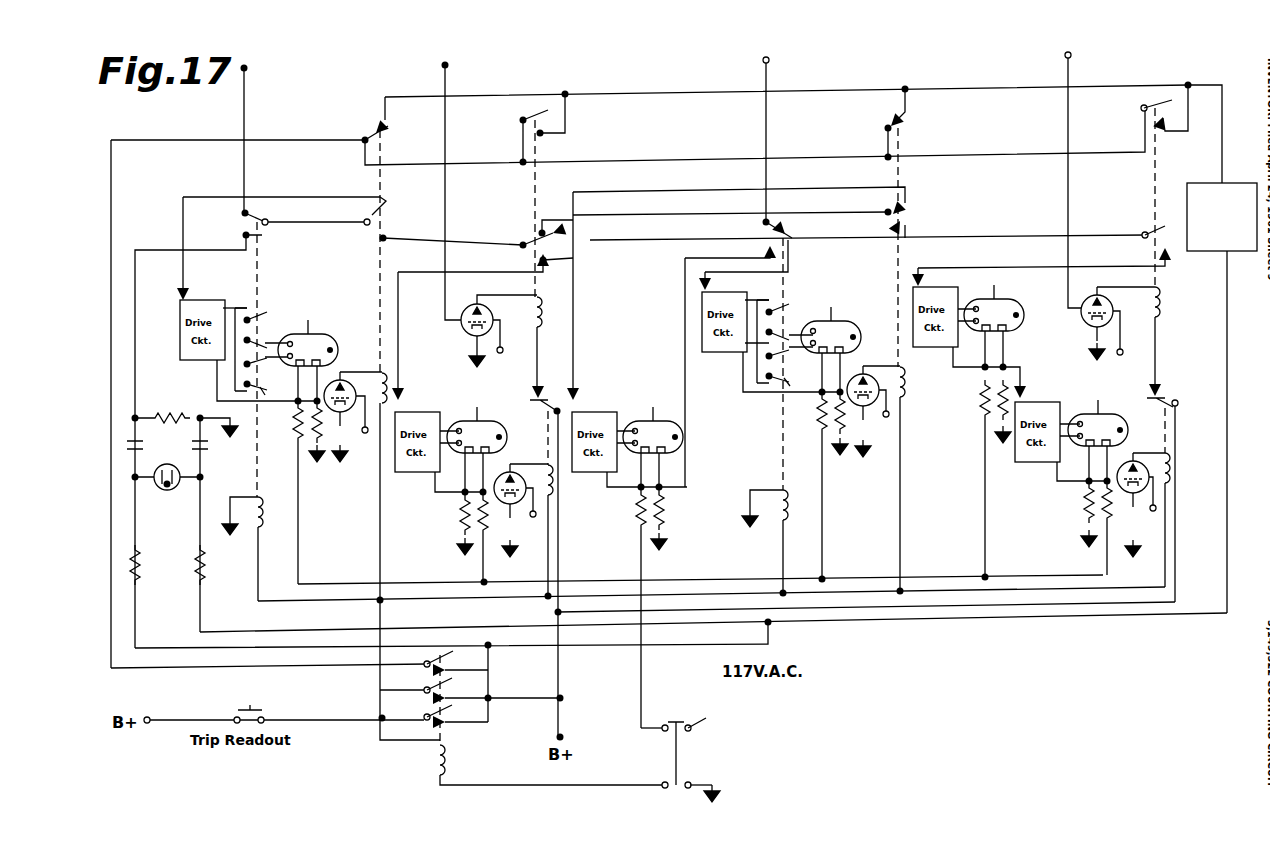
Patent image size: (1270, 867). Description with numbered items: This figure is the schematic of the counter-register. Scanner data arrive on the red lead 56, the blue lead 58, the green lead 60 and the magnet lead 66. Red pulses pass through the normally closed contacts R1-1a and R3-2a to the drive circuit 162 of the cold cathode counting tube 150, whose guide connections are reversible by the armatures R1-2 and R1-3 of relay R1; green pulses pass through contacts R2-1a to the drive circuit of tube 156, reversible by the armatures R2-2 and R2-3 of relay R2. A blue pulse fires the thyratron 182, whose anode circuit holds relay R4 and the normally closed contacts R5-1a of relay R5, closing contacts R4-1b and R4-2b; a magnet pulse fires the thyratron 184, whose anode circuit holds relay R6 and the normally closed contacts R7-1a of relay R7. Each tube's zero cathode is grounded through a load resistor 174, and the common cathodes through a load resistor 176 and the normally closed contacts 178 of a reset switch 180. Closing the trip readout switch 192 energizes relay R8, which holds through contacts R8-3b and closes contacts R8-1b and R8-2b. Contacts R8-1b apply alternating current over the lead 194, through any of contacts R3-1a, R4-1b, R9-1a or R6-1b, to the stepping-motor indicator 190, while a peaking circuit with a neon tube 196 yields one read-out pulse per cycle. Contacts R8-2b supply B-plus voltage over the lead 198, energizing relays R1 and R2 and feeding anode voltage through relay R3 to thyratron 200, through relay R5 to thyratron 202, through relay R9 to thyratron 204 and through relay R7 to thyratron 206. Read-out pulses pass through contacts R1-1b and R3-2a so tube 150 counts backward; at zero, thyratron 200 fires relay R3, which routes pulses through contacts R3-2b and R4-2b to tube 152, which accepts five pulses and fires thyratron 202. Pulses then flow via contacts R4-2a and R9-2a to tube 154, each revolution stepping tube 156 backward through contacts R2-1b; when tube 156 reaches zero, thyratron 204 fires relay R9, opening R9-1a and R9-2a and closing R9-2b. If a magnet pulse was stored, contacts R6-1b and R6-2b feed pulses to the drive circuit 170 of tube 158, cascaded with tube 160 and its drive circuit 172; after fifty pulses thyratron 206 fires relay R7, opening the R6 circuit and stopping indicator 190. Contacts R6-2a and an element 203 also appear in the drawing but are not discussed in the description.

The red lead 56 is at (244, 95).
The blue lead 58 is at (445, 77).
The green lead 60 is at (766, 70).
The magnet lead 66 is at (1068, 65).
The cold cathode counting tube 150 is at (290, 334).
The counting tube 152 is at (462, 423).
The counting tube 154 is at (683, 435).
The counting tube 156 is at (858, 332).
The counting tube 158 is at (1024, 314).
The counting tube 160 is at (1085, 414).
The drive circuit 162 is at (180, 326).
The drive circuit 170 is at (930, 282).
The drive circuit 172 is at (1040, 400).
The load resistor 174 is at (313, 438).
The load resistor 176 is at (296, 428).
The normally closed contacts 178 is at (706, 718).
The reset switch 180 is at (676, 757).
The thyratron 182 is at (461, 324).
The thyratron 184 is at (1081, 325).
The indicator 190 is at (1231, 183).
The trip readout switch 192 is at (266, 712).
The lead 194 is at (188, 668).
The neon tube 196 is at (162, 491).
The lead 198 is at (498, 601).
The thyratron 200 is at (343, 377).
The thyratron 202 is at (509, 464).
The conductor 203 is at (687, 407).
The thyratron 204 is at (860, 370).
The thyratron 206 is at (1132, 460).
The relay R1 is at (263, 517).
The relay R2 is at (786, 497).
The relay R3 is at (387, 392).
The relay R4 is at (543, 312).
The relay R5 is at (555, 483).
The relay R6 is at (1161, 298).
The relay R7 is at (1171, 472).
The relay R8 is at (448, 760).
The relay R9 is at (904, 386).
The normally closed contacts R1-1a is at (262, 216).
The contacts R1-1b is at (230, 438).
The armature R1-2 is at (254, 312).
The armature R1-3 is at (285, 394).
The contacts R2-1a is at (792, 222).
The contacts R2-1b is at (765, 249).
The armature R2-2 is at (785, 325).
The armature R2-3 is at (808, 388).
The contacts R3-1a is at (406, 118).
The normally closed contacts R3-2a is at (356, 202).
The contacts R3-2b is at (383, 238).
The contacts R4-1b is at (548, 133).
The contacts R4-2a is at (556, 233).
The contacts R4-2b is at (573, 258).
The normally closed contacts R5-1a is at (550, 402).
The contacts R6-1b is at (1186, 183).
The relay R6 contact 2a R6-2a is at (1153, 232).
The contacts R6-2b is at (1071, 265).
The normally closed contacts R7-1a is at (1163, 395).
The contacts R8-1b is at (455, 668).
The contacts R8-2b is at (462, 693).
The contacts R8-3b is at (452, 724).
The contacts R9-1a is at (905, 112).
The contacts R9-2a is at (905, 200).
The contacts R9-2b is at (905, 230).